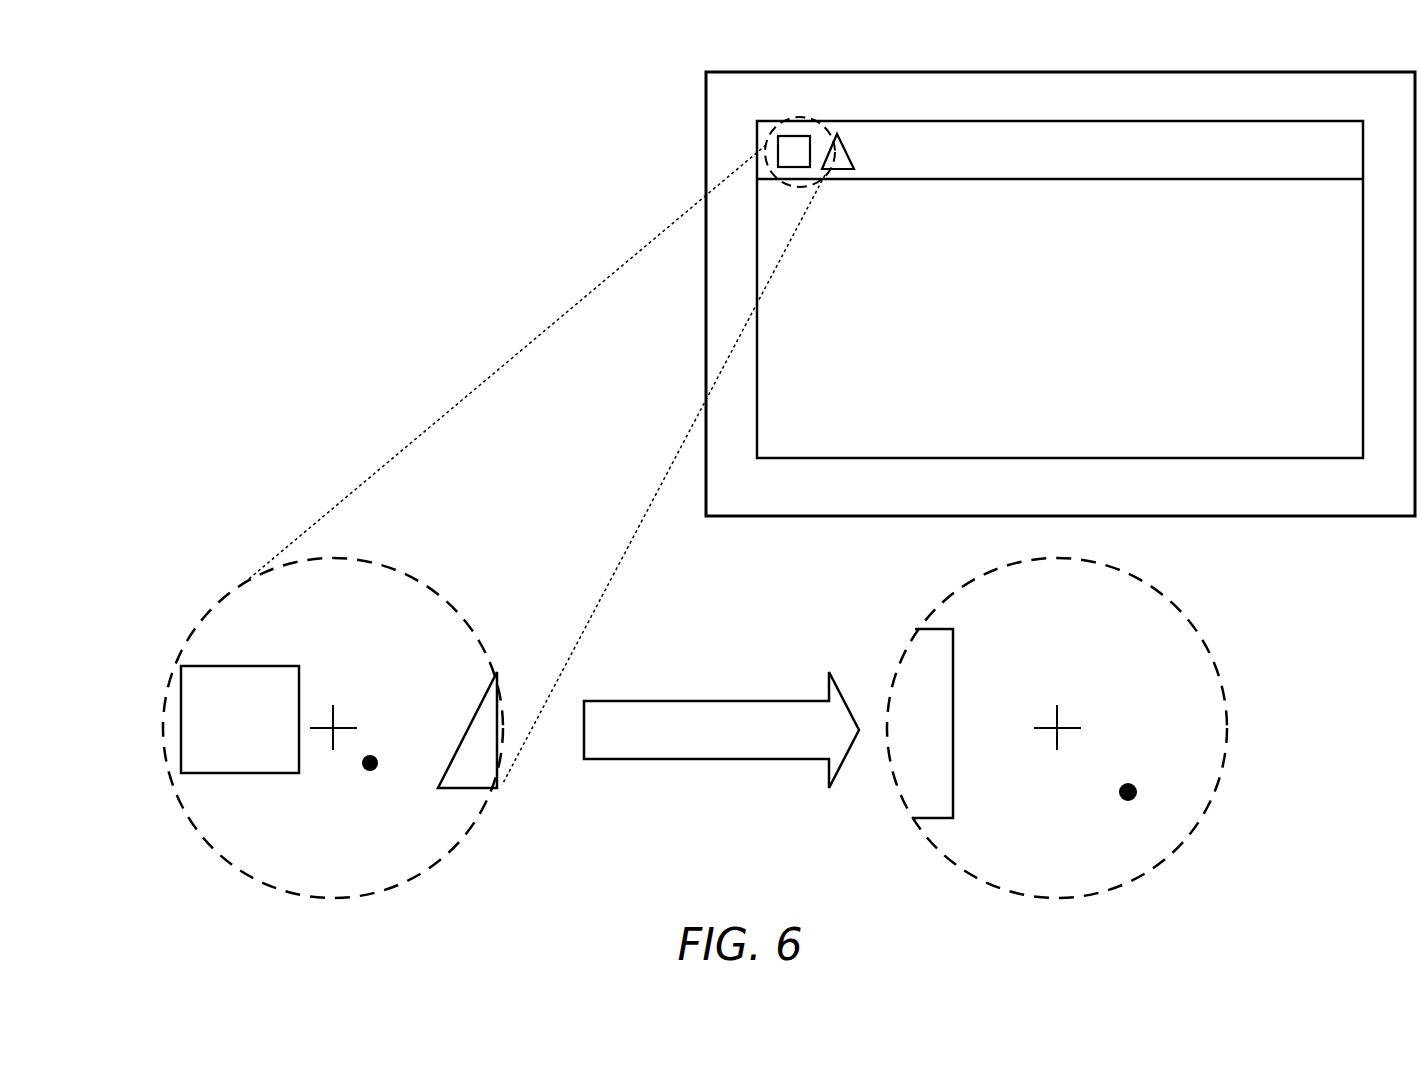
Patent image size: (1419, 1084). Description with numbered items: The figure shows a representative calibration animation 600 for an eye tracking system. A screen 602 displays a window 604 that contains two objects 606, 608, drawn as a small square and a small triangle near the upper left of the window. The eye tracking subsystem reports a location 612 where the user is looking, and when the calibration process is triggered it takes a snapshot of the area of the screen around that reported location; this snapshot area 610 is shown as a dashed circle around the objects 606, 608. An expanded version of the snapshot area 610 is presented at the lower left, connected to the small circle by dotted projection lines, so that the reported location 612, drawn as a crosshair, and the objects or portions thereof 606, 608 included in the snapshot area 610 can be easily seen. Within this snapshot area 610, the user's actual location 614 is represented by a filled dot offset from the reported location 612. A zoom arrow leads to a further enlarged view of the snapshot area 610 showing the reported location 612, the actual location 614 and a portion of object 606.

The calibration animation 600 is at (168, 112).
The screen 602 is at (1340, 517).
The window 604 is at (1240, 120).
The object 606 is at (790, 136).
The object 608 is at (846, 138).
The snapshot area 610 is at (800, 186).
The reported location 612 is at (338, 724).
The actual location 614 is at (377, 772).